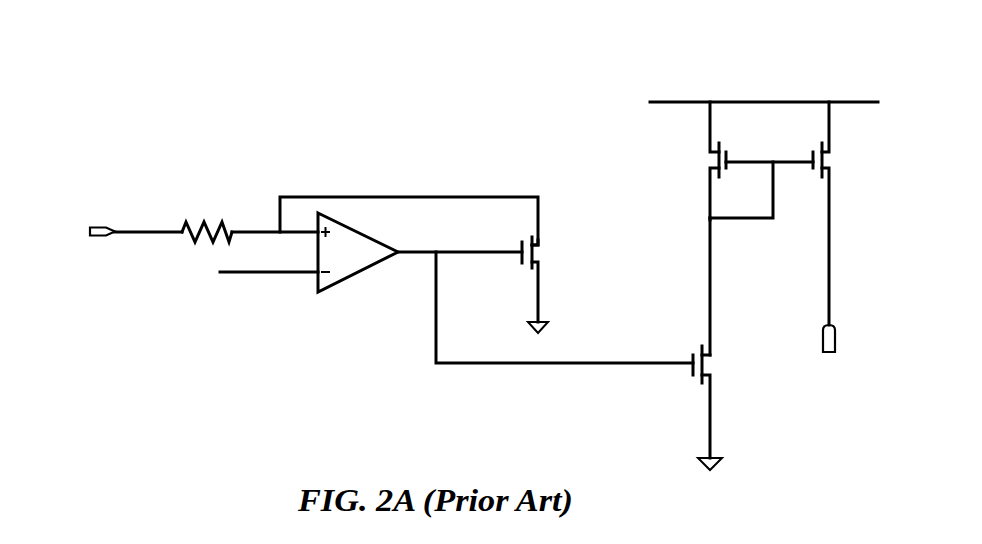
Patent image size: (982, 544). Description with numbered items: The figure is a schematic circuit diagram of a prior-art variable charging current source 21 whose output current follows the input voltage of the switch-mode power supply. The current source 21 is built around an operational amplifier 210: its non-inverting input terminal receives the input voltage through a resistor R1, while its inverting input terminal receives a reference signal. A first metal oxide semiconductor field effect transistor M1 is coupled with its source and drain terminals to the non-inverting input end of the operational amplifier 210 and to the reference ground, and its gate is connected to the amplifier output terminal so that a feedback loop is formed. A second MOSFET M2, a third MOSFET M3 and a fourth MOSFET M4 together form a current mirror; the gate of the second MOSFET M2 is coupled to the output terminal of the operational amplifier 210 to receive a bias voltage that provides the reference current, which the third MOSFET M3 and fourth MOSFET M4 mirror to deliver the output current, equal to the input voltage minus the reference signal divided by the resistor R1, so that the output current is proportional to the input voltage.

The variable charging current source 21 is at (458, 286).
The operational amplifier 210 is at (362, 258).
The resistor R1 is at (207, 218).
The first metal oxide semiconductor field effect transistor M1 is at (548, 285).
The second MOSFET M2 is at (720, 408).
The third MOSFET M3 is at (699, 161).
The fourth MOSFET M4 is at (839, 213).